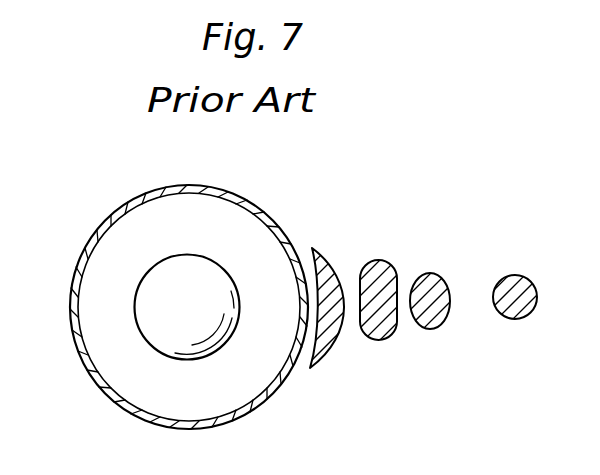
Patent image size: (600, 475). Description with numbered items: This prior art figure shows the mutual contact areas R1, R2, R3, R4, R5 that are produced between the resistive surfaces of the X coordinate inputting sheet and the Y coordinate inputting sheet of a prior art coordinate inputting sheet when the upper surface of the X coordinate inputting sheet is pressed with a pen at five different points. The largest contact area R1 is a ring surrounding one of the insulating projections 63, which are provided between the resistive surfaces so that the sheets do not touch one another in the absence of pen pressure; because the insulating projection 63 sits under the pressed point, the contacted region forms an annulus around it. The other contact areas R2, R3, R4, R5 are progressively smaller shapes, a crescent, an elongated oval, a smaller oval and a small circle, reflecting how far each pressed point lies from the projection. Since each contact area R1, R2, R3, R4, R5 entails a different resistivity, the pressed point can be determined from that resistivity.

The contact area R1 is at (263, 217).
The contact area R2 is at (335, 262).
The contact area R3 is at (390, 258).
The contact area R4 is at (438, 268).
The contact area R5 is at (520, 273).
The insulating projection 63 is at (224, 349).